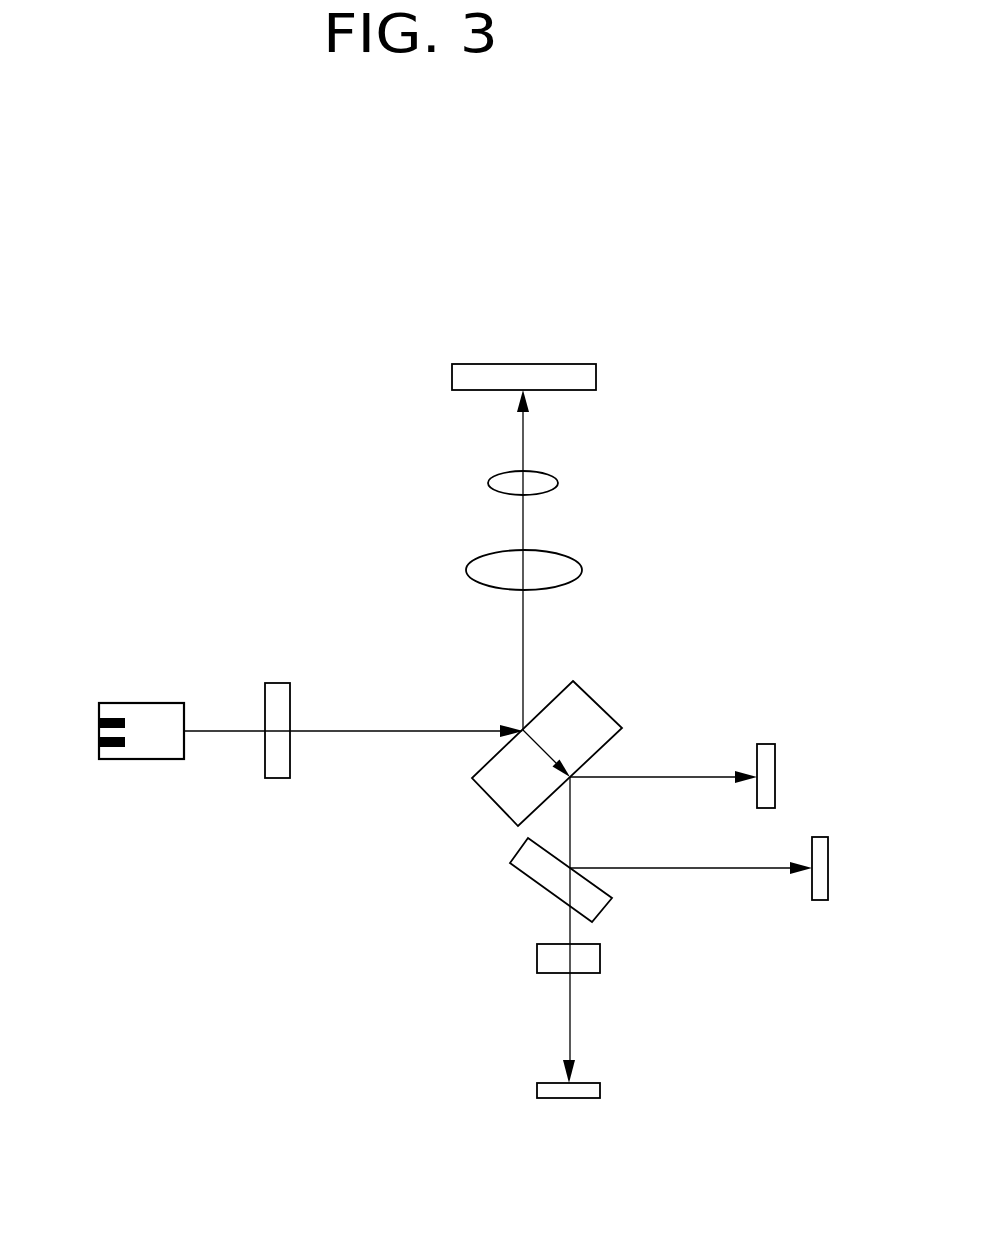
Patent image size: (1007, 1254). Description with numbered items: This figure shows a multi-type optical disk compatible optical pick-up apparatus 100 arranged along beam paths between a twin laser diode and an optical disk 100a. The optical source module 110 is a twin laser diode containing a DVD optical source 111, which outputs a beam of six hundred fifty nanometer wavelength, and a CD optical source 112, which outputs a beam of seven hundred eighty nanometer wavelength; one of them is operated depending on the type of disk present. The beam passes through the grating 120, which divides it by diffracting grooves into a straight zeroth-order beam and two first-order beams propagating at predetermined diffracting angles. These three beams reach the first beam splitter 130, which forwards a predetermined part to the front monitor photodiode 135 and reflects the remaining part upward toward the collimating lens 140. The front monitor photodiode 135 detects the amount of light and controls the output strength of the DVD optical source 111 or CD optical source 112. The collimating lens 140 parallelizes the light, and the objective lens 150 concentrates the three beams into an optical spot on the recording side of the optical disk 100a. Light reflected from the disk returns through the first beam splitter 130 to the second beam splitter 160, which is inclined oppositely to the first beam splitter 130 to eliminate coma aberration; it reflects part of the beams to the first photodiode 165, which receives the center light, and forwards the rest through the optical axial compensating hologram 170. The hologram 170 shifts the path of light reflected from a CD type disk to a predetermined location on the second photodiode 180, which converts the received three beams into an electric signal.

The multi-type optical disk compatible optical pick-up apparatus 100 is at (687, 295).
The optical disk 100a is at (596, 377).
The optical source module 110 is at (135, 682).
The DVD optical source 111 is at (99, 722).
The CD optical source 112 is at (99, 742).
The grating 120 is at (277, 683).
The first beam splitter 130 is at (597, 702).
The front monitor photodiode 135 is at (765, 744).
The collimating lens 140 is at (582, 570).
The objective lens 150 is at (558, 483).
The second beam splitter 160 is at (610, 897).
The first photodiode 165 is at (819, 837).
The optical axial compensating hologram 170 is at (600, 958).
The second photodiode 180 is at (600, 1090).